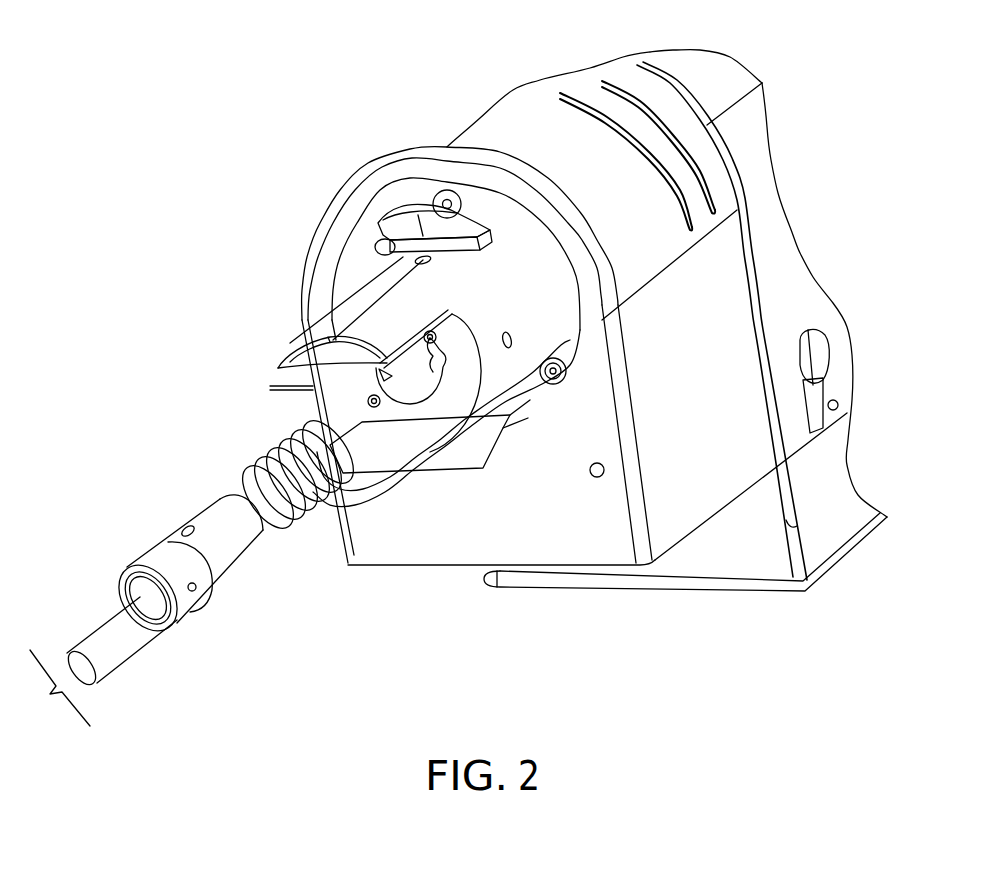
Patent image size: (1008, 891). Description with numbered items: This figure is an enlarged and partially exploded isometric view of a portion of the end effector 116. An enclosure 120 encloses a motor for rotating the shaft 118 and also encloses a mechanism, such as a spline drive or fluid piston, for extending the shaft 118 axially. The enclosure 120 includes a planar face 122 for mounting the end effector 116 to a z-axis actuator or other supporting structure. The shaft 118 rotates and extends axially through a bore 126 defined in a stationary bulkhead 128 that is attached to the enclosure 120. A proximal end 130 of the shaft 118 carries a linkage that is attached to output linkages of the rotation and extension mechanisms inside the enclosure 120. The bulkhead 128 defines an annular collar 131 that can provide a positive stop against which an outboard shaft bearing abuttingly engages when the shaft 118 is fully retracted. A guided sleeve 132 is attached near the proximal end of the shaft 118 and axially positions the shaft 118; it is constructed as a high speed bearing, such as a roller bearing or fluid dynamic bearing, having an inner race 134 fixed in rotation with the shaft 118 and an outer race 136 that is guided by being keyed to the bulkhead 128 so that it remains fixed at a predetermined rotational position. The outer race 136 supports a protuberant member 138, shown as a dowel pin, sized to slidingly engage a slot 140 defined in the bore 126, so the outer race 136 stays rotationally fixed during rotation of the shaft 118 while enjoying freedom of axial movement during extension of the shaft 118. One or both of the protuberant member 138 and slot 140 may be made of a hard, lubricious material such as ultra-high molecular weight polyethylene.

The end effector 116 is at (328, 78).
The shaft 118 is at (123, 660).
The enclosure 120 is at (423, 143).
The planar face 122 is at (672, 592).
The bore 126 is at (378, 388).
The stationary bulkhead 128 is at (488, 345).
The proximal end 130 is at (197, 505).
The annular collar 131 is at (335, 335).
The guided sleeve 132 is at (118, 562).
The inner race 134 is at (125, 578).
The outer race 136 is at (190, 567).
The protuberant member 138 is at (200, 590).
The slot 140 is at (425, 378).